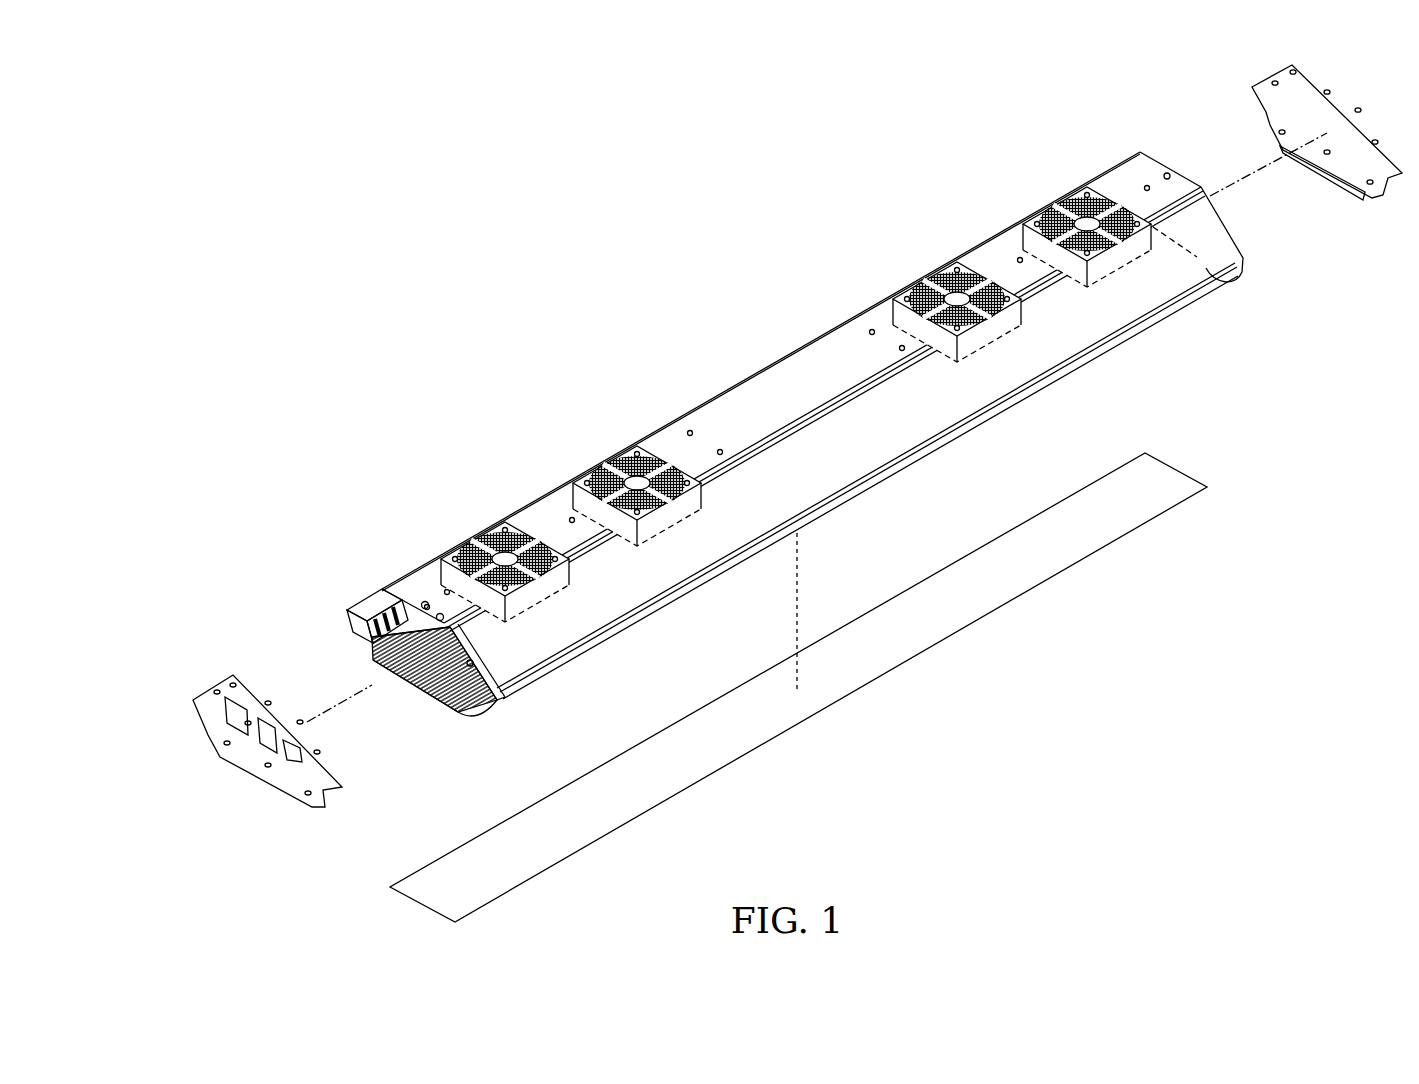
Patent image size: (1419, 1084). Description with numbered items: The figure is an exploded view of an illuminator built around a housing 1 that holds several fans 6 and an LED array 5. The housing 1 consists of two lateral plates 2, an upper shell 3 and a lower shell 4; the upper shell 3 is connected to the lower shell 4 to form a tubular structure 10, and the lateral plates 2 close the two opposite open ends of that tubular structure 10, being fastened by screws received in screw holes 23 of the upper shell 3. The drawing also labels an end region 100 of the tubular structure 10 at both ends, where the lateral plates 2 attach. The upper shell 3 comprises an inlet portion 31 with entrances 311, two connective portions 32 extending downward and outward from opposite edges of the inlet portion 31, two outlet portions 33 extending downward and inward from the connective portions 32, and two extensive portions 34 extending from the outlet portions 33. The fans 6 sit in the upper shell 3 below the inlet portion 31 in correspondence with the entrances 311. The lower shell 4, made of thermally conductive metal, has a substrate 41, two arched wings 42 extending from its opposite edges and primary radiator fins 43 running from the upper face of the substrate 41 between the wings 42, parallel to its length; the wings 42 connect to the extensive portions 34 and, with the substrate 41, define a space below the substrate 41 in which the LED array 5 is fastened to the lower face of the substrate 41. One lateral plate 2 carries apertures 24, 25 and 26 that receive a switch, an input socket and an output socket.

The housing 1 is at (251, 772).
The lateral plate 2 is at (1318, 88).
The upper shell 3 is at (265, 513).
The lower shell 4 is at (394, 726).
The LED array 5 is at (830, 702).
The fan 6 is at (452, 574).
The tubular structure 10 is at (720, 484).
The screw hole 23 is at (428, 607).
The aperture 24 is at (262, 745).
The aperture 25 is at (228, 714).
The aperture 26 is at (300, 752).
The inlet portion 31 is at (790, 375).
The connective portion 32 is at (610, 603).
The outlet portion 33 is at (487, 702).
The extensive portion 34 is at (363, 643).
The substrate 41 is at (423, 690).
The wing 42 is at (407, 768).
The primary radiator fin 43 is at (445, 685).
The accommodating space 100 is at (1192, 266).
The entrance 311 is at (503, 548).